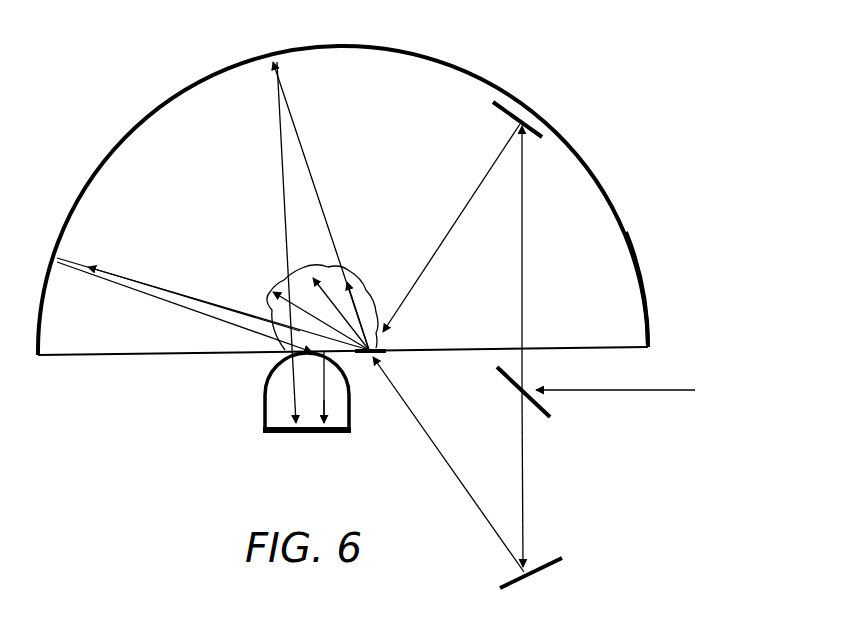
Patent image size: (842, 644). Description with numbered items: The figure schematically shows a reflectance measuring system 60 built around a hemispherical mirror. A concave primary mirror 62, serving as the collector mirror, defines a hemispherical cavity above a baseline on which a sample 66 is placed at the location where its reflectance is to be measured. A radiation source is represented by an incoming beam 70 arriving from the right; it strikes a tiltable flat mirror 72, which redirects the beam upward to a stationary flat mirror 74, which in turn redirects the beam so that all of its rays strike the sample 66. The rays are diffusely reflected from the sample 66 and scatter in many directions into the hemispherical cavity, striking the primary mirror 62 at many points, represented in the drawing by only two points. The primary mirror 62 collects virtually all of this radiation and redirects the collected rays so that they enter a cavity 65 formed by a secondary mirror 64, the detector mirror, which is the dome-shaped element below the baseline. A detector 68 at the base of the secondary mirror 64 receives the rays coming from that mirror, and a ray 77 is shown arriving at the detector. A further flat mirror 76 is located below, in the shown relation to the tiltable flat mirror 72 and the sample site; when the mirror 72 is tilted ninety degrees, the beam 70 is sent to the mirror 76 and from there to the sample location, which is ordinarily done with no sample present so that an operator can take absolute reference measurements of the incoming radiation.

The system 60 is at (587, 117).
The concave primary mirror 62 is at (626, 230).
The secondary mirror 64 is at (265, 405).
The cavity 65 is at (277, 412).
The sample 66 is at (386, 347).
The detector 68 is at (318, 433).
The incoming beam 70 is at (670, 390).
The tiltable flat mirror 72 is at (508, 378).
The stationary flat mirror 74 is at (514, 117).
The flat mirror 76 is at (545, 566).
The reflected ray 77 is at (336, 420).